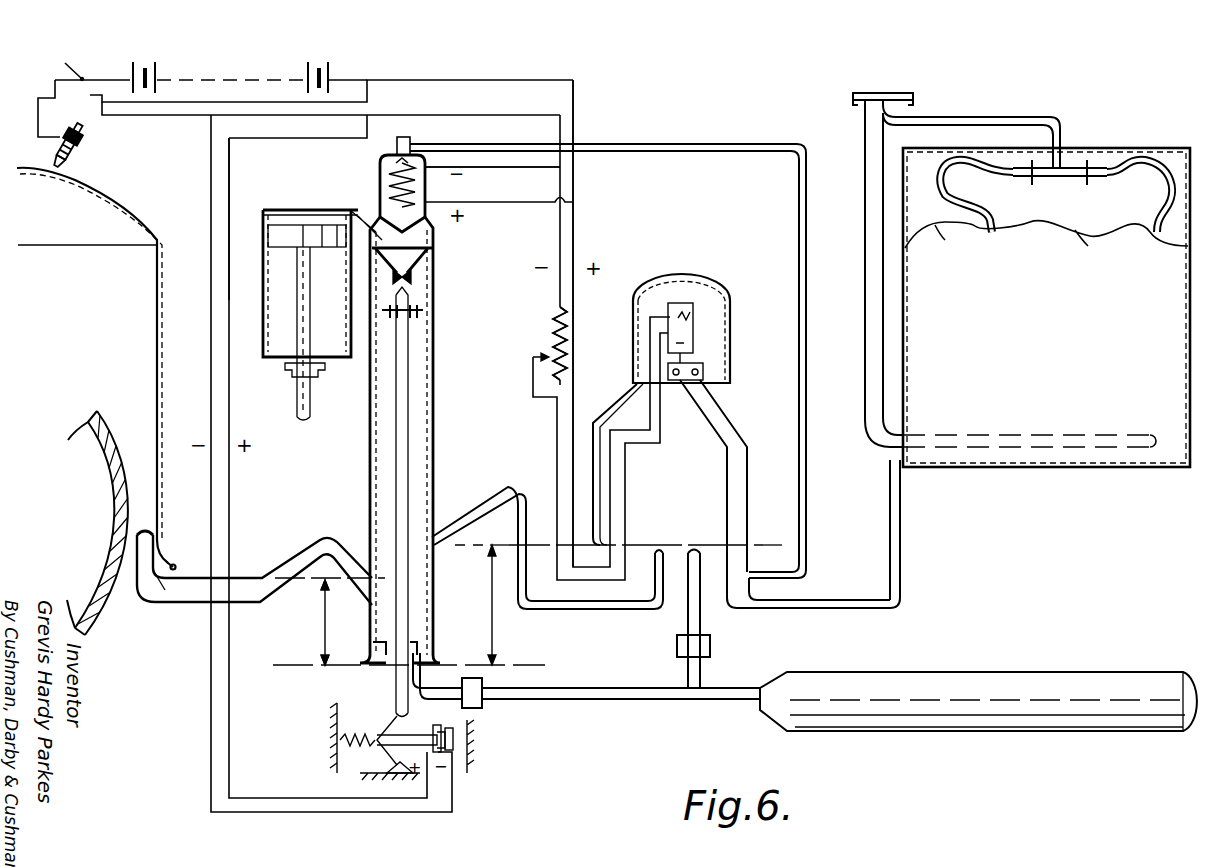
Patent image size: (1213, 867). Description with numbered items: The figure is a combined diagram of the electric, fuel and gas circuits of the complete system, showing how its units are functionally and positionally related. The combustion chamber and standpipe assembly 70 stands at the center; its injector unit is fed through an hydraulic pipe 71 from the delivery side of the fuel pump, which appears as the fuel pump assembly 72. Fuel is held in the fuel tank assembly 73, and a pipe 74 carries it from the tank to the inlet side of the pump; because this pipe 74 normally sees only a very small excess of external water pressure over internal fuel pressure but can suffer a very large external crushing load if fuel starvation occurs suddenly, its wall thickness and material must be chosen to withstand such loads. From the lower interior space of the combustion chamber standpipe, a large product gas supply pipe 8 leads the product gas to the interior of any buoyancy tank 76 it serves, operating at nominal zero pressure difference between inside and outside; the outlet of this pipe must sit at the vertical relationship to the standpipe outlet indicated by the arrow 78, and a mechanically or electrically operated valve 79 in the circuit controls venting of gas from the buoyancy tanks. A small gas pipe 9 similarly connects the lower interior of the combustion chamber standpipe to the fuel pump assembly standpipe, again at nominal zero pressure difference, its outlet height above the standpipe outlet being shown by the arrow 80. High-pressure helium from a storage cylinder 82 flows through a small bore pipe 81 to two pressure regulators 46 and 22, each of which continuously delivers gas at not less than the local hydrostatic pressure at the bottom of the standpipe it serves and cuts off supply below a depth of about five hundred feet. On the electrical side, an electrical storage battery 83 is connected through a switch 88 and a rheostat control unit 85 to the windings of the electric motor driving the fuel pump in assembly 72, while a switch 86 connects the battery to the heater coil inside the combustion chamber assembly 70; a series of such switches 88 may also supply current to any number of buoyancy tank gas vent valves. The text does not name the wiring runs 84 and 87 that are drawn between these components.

The product gas supply pipe 8 is at (187, 603).
The small gas pipe 9 is at (560, 602).
The pressure regulator 22 is at (477, 710).
The pressure regulator 46 is at (704, 645).
The combustion chamber and standpipe assembly 70 is at (379, 186).
The hydraulic pipe 71 is at (703, 143).
The fuel pump assembly 72 is at (720, 283).
The fuel tank assembly 73 is at (1048, 468).
The pipe 74 is at (897, 580).
The buoyancy tank 76 is at (157, 300).
The arrow 78 is at (323, 617).
The valve 79 is at (75, 153).
The arrow 80 is at (497, 620).
The small bore pipe 81 is at (630, 700).
The storage cylinder 82 is at (1020, 720).
The electrical storage battery 83 is at (181, 74).
The wire 84 is at (577, 247).
The rheostat control unit 85 is at (547, 356).
The switch 86 is at (478, 160).
The wire 87 is at (231, 192).
The switch 88 is at (57, 65).